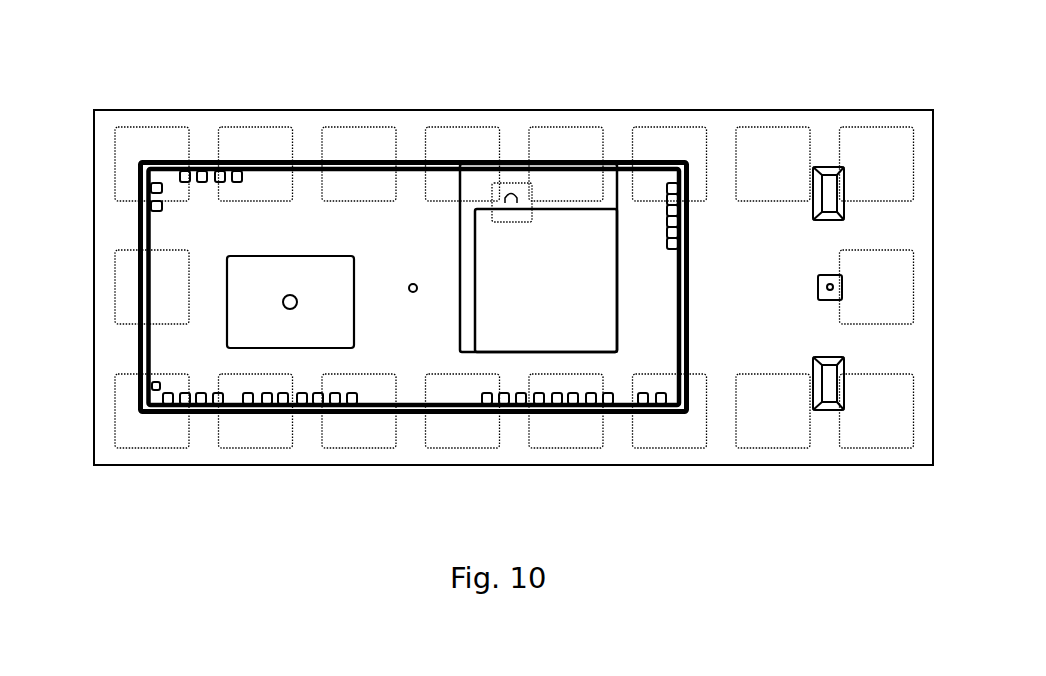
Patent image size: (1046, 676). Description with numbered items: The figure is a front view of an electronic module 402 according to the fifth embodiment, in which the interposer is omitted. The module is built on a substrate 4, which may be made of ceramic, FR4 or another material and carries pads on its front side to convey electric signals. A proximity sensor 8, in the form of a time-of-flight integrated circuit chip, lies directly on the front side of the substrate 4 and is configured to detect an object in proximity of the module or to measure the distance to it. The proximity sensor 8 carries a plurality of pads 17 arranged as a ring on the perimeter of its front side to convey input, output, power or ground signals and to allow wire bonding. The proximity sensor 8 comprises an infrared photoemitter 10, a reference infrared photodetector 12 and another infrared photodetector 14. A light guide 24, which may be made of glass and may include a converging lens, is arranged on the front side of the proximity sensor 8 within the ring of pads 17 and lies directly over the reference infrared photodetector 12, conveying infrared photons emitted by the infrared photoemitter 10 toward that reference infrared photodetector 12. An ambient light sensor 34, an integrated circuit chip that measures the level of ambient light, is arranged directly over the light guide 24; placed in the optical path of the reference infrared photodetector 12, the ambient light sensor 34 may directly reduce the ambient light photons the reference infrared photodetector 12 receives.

The electronic module 402 is at (498, 280).
The substrate 4 is at (297, 142).
The proximity sensor 8 is at (319, 358).
The pads 17 is at (219, 177).
The infrared photodetector 14 is at (252, 296).
The light guide 24 is at (551, 190).
The ambient light sensor 34 is at (582, 245).
The reference infrared photodetector 12 is at (508, 197).
The infrared photoemitter 10 is at (818, 276).